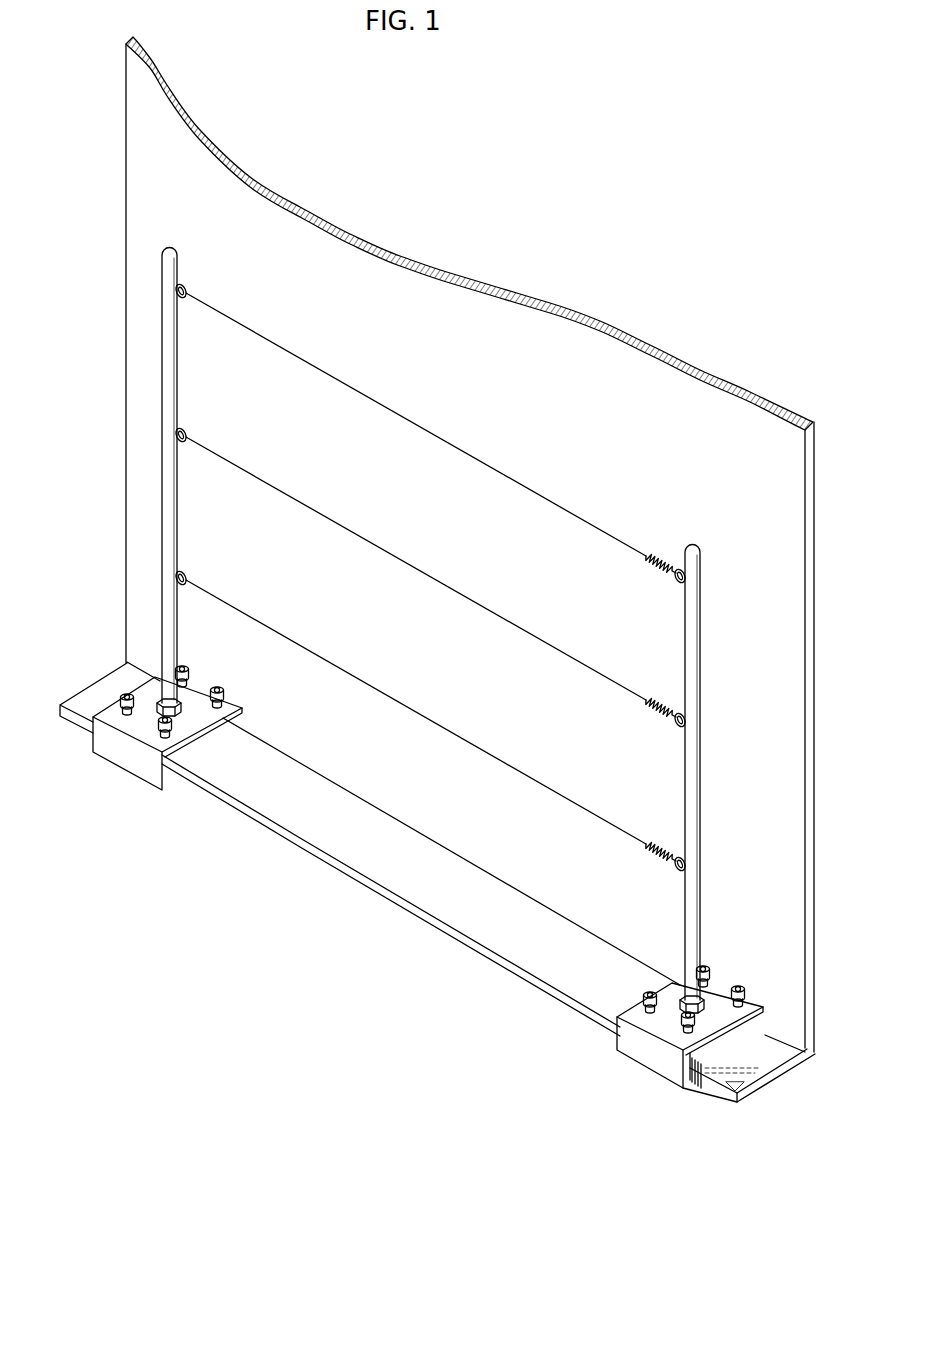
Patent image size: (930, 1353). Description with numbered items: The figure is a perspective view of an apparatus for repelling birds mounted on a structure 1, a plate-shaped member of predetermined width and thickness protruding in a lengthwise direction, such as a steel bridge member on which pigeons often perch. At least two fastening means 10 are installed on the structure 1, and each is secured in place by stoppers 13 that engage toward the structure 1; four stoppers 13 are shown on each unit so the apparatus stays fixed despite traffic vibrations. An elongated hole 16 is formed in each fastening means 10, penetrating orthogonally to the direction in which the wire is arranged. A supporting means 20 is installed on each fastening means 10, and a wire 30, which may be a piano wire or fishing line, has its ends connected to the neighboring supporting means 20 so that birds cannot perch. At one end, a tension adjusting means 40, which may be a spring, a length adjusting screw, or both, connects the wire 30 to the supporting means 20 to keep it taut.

The structure 1 is at (475, 950).
The fastening means 10 is at (140, 797).
The stopper 13 is at (114, 703).
The elongated hole 16 is at (668, 1018).
The supporting means 20 is at (693, 618).
The wire 30 is at (428, 424).
The tension adjusting means 40 is at (673, 704).